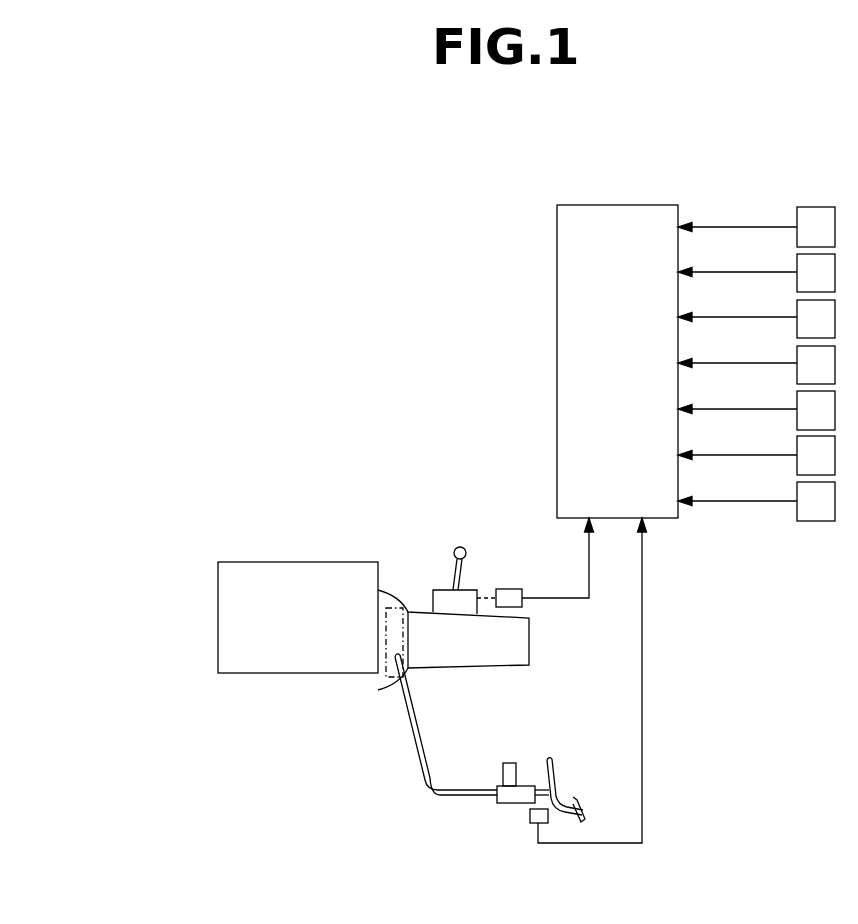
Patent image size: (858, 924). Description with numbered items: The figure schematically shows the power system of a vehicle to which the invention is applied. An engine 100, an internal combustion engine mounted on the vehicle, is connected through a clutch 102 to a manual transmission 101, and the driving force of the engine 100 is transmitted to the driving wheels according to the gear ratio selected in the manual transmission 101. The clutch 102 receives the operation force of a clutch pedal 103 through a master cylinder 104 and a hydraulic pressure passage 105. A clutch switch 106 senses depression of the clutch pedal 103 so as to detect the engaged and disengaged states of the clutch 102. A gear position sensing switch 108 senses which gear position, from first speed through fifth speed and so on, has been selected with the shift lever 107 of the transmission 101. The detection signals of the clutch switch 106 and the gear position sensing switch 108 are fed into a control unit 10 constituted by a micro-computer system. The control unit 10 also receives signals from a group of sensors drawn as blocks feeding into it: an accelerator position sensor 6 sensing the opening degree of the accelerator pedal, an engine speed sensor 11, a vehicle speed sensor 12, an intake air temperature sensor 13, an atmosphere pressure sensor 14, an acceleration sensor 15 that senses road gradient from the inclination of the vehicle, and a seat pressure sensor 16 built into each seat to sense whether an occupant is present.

The control unit 10 is at (563, 237).
The accelerator position sensor 6 is at (756, 227).
The engine speed sensor 11 is at (756, 273).
The vehicle speed sensor 12 is at (756, 319).
The intake air temperature sensor 13 is at (756, 365).
The atmosphere pressure sensor 14 is at (756, 410).
The acceleration sensor 15 is at (756, 455).
The seat pressure sensor 16 is at (756, 501).
The engine 100 is at (222, 596).
The manual transmission 101 is at (480, 658).
The clutch 102 is at (385, 643).
The clutch pedal 103 is at (577, 800).
The master cylinder 104 is at (497, 802).
The hydraulic pressure passage 105 is at (420, 752).
The clutch switch 106 is at (536, 825).
The shift lever 107 is at (457, 547).
The gear position sensing switch 108 is at (511, 588).